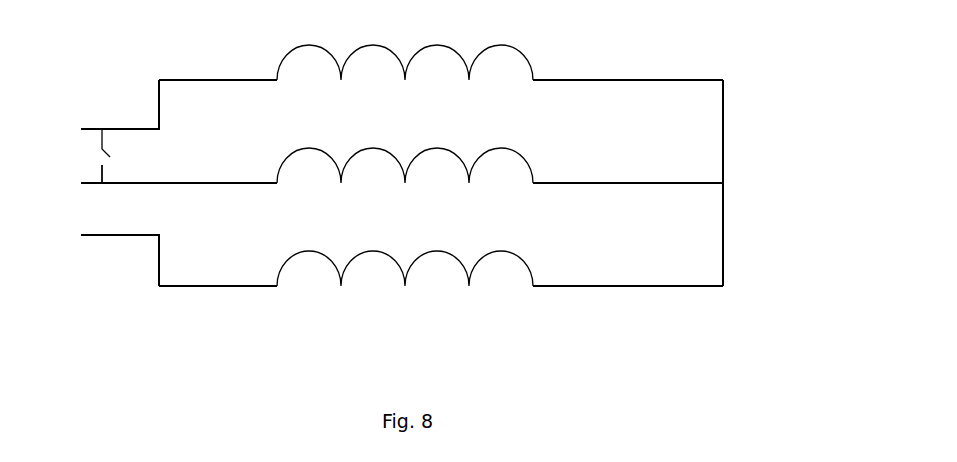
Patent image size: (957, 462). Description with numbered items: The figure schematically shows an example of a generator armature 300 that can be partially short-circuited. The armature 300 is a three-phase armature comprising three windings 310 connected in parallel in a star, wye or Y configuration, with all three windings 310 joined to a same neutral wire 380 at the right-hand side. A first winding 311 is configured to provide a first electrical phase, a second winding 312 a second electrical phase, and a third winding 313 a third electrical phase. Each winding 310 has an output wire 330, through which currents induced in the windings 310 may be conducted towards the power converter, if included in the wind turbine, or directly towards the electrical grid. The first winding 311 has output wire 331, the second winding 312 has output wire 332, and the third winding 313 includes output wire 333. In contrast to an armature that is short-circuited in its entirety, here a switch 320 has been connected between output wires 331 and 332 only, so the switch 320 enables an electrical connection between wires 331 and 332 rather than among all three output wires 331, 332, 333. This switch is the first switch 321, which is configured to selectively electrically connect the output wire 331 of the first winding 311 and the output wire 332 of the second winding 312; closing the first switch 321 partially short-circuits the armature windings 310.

The armature 300 is at (410, 201).
The windings 310 is at (667, 79).
The first winding 311 is at (547, 78).
The second winding 312 is at (558, 182).
The third winding 313 is at (550, 285).
The switch 320 is at (98, 175).
The first switch 321 is at (98, 183).
The output wires 330 is at (190, 80).
The output wire of the first winding 331 is at (122, 129).
The output wire of the second winding 332 is at (143, 182).
The output wire of the third winding 333 is at (138, 235).
The neutral wire 380 is at (725, 210).